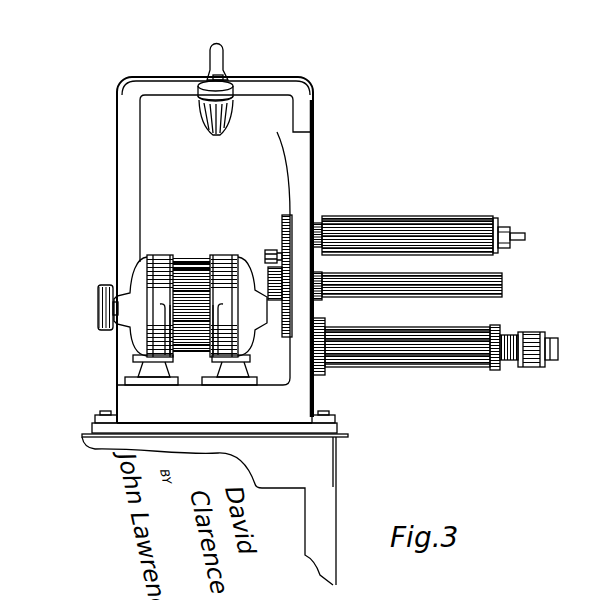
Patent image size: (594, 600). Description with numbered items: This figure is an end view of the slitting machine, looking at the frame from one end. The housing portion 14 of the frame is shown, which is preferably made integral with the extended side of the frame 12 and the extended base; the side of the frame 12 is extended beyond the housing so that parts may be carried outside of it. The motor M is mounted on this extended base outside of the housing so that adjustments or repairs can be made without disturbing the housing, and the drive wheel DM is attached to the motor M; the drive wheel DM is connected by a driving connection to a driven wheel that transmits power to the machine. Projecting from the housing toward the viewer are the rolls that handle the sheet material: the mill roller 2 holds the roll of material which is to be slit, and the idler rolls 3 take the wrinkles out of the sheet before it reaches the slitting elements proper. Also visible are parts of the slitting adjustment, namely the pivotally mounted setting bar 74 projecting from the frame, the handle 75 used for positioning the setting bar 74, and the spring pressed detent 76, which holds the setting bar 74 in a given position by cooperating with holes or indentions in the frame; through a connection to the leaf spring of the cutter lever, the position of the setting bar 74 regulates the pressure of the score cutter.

The housing portion 14 is at (190, 158).
The side of the frame 12 is at (298, 158).
The drive wheel DM is at (105, 283).
The motor M is at (182, 282).
The handle 75 is at (277, 243).
The spring pressed detent 76 is at (265, 250).
The idler rolls 3 is at (447, 222).
The setting bar 74 is at (503, 282).
The mill roller 2 is at (443, 355).